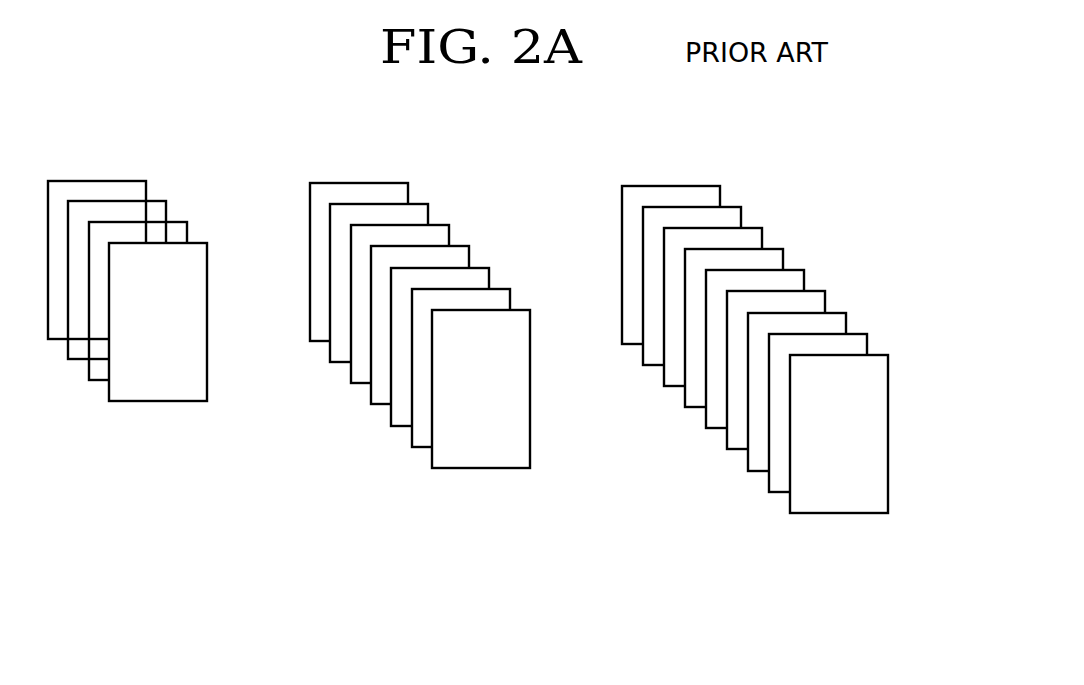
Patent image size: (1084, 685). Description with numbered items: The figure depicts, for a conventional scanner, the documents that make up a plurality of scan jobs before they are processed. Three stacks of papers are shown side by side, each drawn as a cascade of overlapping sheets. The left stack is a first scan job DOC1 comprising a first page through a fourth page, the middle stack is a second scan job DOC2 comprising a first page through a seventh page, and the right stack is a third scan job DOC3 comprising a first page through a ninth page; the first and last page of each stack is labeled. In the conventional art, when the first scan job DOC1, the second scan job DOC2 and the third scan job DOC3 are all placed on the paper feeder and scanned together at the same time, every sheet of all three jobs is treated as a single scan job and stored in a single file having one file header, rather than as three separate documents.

The first scan job DOC1 is at (203, 379).
The second scan job DOC2 is at (465, 382).
The third scan job DOC3 is at (778, 386).